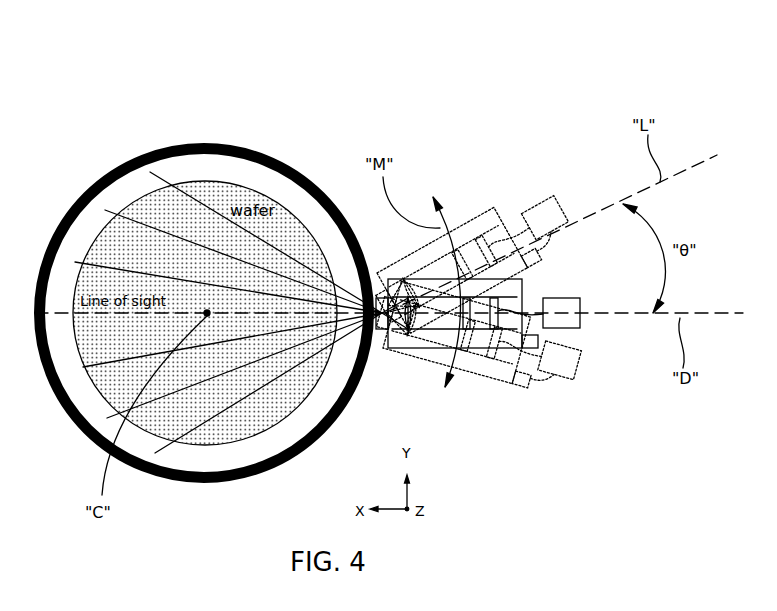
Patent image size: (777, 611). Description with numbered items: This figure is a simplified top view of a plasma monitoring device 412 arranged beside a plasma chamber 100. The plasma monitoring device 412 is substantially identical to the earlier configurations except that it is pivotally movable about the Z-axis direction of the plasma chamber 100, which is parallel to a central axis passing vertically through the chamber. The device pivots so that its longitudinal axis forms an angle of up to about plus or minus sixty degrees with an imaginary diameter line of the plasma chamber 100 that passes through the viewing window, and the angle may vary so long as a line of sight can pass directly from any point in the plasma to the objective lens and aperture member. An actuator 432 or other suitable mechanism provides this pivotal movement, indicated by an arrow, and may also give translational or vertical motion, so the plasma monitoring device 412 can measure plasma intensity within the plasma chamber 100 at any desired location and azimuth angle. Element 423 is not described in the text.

The plasma chamber 100 is at (152, 148).
The plasma monitoring device 412 is at (475, 217).
The optical emission spectrometer fiber 423 is at (538, 338).
The actuator 432 is at (533, 257).